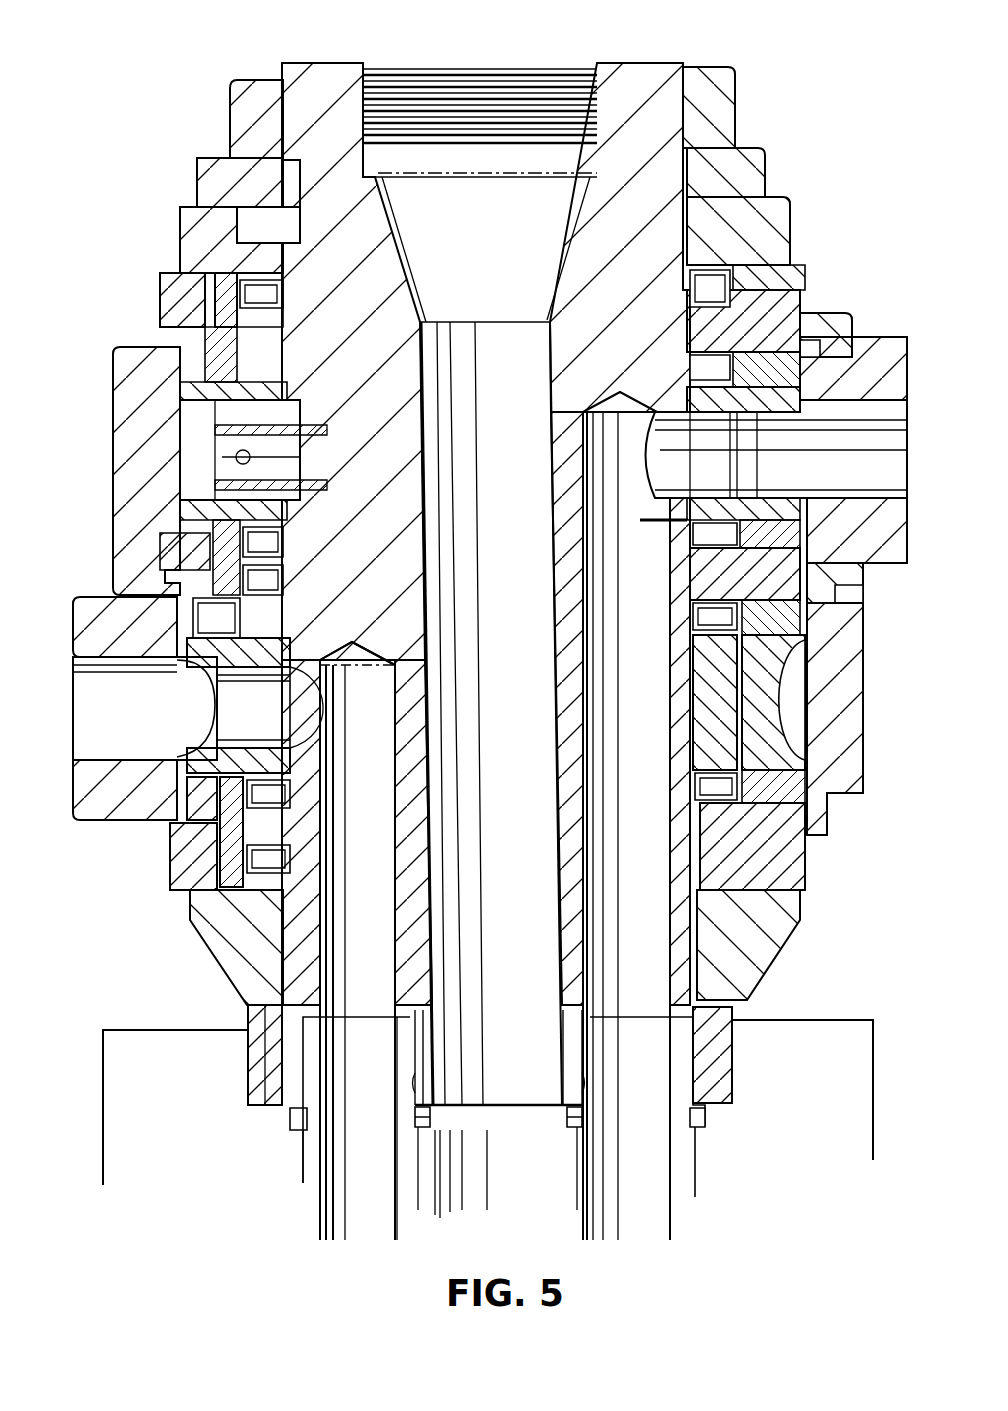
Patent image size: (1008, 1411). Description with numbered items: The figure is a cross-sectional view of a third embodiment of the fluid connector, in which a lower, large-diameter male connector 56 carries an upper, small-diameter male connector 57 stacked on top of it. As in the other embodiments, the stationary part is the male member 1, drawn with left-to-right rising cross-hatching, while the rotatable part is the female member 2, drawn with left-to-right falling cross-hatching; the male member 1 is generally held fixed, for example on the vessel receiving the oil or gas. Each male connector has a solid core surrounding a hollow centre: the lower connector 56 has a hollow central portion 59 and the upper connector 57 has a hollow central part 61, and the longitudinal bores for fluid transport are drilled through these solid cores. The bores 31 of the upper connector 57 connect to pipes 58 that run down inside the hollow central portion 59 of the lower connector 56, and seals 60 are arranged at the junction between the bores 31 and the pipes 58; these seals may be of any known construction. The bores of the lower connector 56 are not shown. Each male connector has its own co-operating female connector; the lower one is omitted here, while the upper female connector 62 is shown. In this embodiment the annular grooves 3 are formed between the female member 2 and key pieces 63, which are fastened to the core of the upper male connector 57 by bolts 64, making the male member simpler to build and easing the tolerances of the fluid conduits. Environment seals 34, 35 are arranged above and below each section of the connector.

The male member 1 is at (312, 98).
The female member 2 is at (200, 240).
The annular grooves 3 is at (199, 488).
The bores 31 is at (382, 849).
The environment seal 34 is at (180, 270).
The environment seal 35 is at (215, 270).
The lower male connector 56 is at (176, 1101).
The upper male connector 57 is at (358, 319).
The pipes 58 is at (367, 1185).
The hollow central portion 59 is at (548, 1176).
The seals 60 is at (432, 1120).
The hollow central part 61 is at (534, 979).
The upper female connector 62 is at (795, 212).
The key pieces 63 is at (155, 393).
The bolts 64 is at (215, 462).